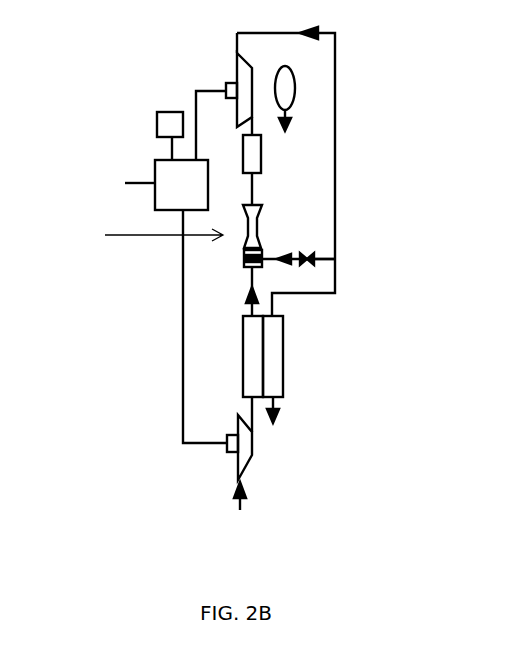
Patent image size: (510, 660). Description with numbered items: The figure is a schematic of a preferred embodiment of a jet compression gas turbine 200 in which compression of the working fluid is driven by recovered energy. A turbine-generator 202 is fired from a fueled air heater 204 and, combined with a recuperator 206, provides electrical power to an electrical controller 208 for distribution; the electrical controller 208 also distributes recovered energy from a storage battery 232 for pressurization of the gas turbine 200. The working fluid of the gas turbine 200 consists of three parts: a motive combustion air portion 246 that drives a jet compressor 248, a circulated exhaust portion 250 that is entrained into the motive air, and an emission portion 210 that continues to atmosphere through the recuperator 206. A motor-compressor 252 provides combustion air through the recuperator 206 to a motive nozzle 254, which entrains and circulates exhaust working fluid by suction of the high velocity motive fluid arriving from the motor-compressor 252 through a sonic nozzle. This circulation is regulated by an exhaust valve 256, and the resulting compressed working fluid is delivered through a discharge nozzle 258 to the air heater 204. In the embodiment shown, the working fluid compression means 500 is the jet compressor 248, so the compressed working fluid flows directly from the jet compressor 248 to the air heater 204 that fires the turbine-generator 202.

The gas turbine 200 is at (220, 45).
The turbine-generator 202 is at (237, 80).
The fueled air heater 204 is at (254, 170).
The recuperator 206 is at (265, 358).
The electrical controller 208 is at (177, 175).
The emission portion 210 is at (280, 408).
The storage battery 232 is at (173, 123).
The motive combustion air portion 246 is at (235, 483).
The jet compressor 248 is at (262, 249).
The circulated exhaust portion 250 is at (313, 260).
The motor-compressor 252 is at (248, 440).
The motive nozzle 254 is at (247, 258).
The exhaust valve 256 is at (312, 262).
The discharge nozzle 258 is at (258, 206).
The working fluid compression means 500 is at (140, 238).